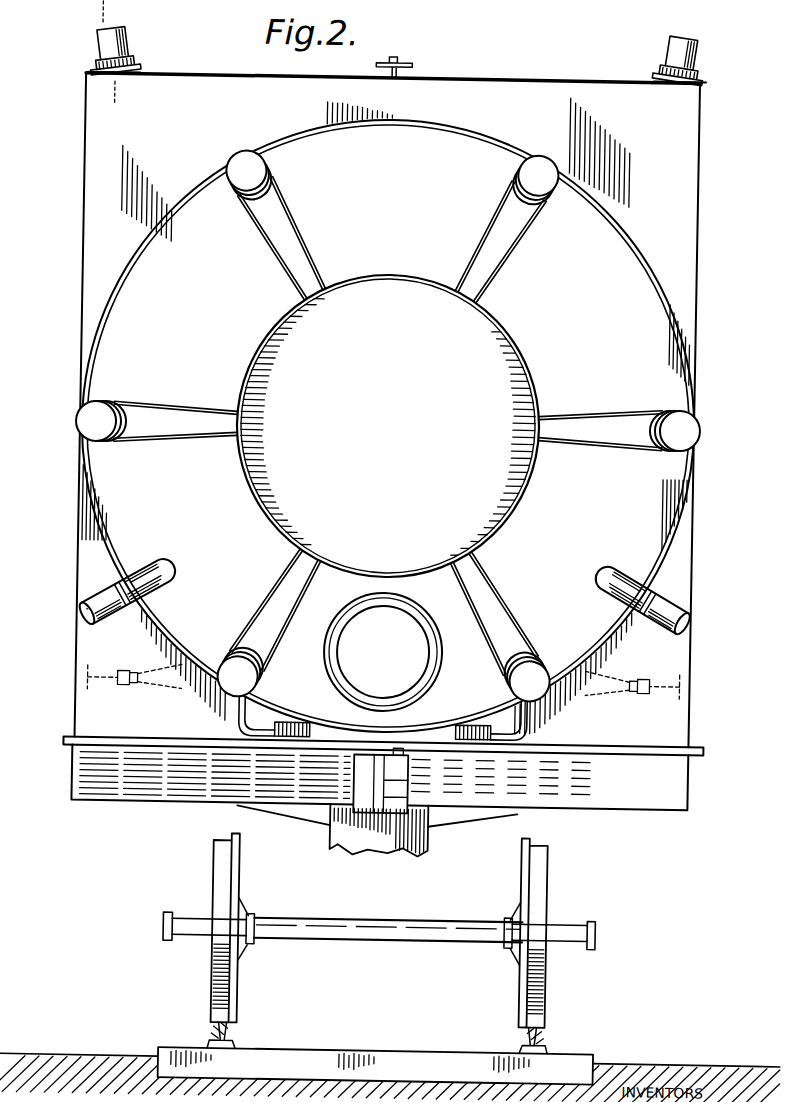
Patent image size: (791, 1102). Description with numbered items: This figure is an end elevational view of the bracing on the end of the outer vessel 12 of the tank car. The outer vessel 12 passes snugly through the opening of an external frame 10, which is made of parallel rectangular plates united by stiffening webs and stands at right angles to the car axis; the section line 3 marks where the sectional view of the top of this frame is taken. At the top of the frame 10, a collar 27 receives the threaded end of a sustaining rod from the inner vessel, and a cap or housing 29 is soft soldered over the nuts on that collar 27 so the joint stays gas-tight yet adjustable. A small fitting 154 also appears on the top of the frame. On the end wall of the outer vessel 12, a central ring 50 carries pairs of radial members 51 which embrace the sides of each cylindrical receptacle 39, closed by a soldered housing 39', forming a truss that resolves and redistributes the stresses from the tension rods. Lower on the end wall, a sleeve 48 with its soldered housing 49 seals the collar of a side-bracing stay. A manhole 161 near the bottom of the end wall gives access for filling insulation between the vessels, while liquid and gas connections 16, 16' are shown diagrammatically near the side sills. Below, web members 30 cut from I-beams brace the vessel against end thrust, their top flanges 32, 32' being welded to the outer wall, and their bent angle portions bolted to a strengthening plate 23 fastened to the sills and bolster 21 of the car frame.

The section line of FIG. 3 is at (107, 96).
The external frame 10 is at (698, 600).
The outer vessel 12 is at (92, 514).
The pin 154 is at (404, 66).
The cap or housing 29 is at (660, 50).
The collar 27 is at (658, 72).
The cylindrical receptacle 39 is at (617, 551).
The housing 39' is at (294, 408).
The radial members 51 is at (276, 596).
The central ring 50 is at (492, 324).
The sleeve 48 is at (632, 582).
The housing 49 is at (690, 612).
The manhole 161 is at (413, 666).
The liquid and gas connection 16 is at (631, 710).
The liquid and gas connection 16' is at (134, 697).
The top flange 32 is at (239, 716).
The top flange 32' is at (535, 722).
The web member 30 is at (502, 738).
The strengthening plate 23 is at (702, 746).
The bolster 21 is at (456, 830).